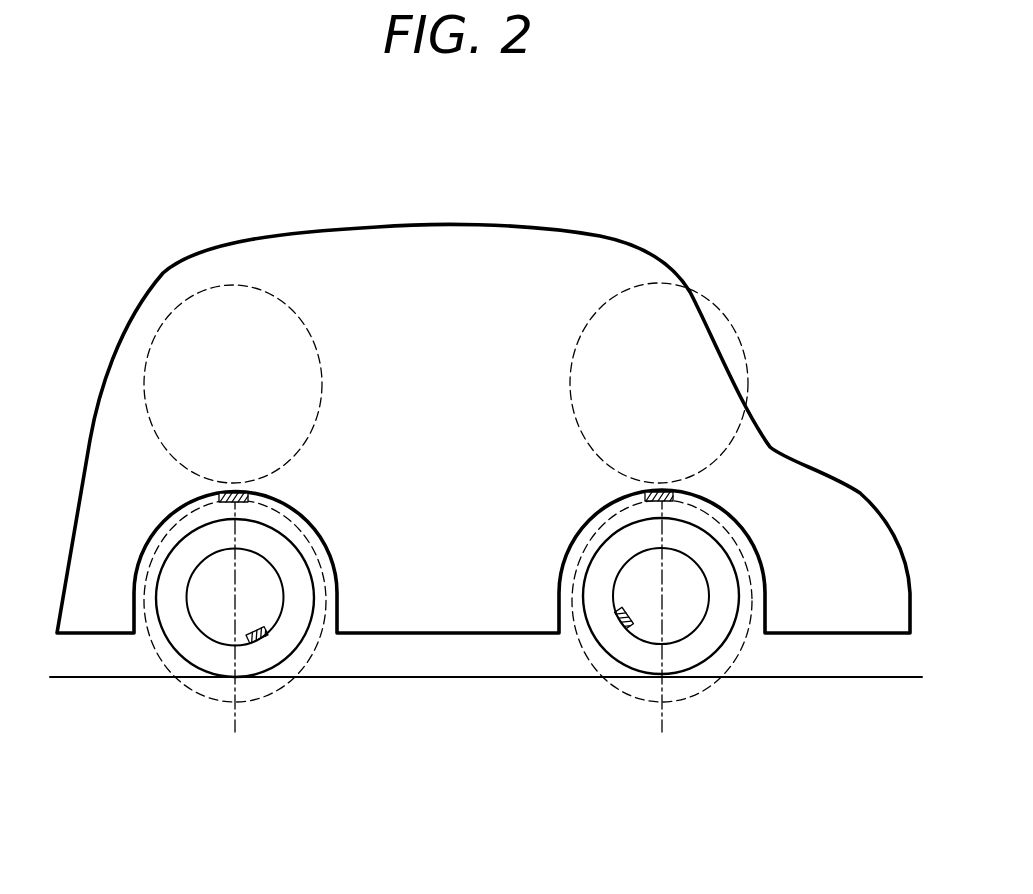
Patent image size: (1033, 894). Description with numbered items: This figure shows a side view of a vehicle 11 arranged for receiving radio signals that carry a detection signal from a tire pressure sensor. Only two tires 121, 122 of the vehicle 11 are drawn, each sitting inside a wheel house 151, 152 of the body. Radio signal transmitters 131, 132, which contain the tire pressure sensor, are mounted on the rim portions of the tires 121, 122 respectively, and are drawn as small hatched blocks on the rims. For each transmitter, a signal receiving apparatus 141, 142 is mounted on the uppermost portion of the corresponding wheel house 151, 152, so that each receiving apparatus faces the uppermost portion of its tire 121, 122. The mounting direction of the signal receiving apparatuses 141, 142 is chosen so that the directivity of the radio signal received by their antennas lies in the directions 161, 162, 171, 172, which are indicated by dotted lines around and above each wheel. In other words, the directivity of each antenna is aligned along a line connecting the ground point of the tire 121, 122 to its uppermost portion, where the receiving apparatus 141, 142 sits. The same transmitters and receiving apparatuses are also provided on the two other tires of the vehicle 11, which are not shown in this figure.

The vehicle 11 is at (458, 276).
The tire 121 is at (637, 653).
The tire 122 is at (212, 653).
The radio signal transmitter 131 is at (617, 618).
The radio signal transmitter 132 is at (263, 642).
The signal receiving apparatus 141 is at (675, 500).
The signal receiving apparatus 142 is at (252, 503).
The wheel house 151 is at (715, 533).
The wheel house 152 is at (288, 542).
The direction 161 is at (722, 655).
The direction 162 is at (720, 422).
The direction 171 is at (302, 653).
The direction 172 is at (309, 372).